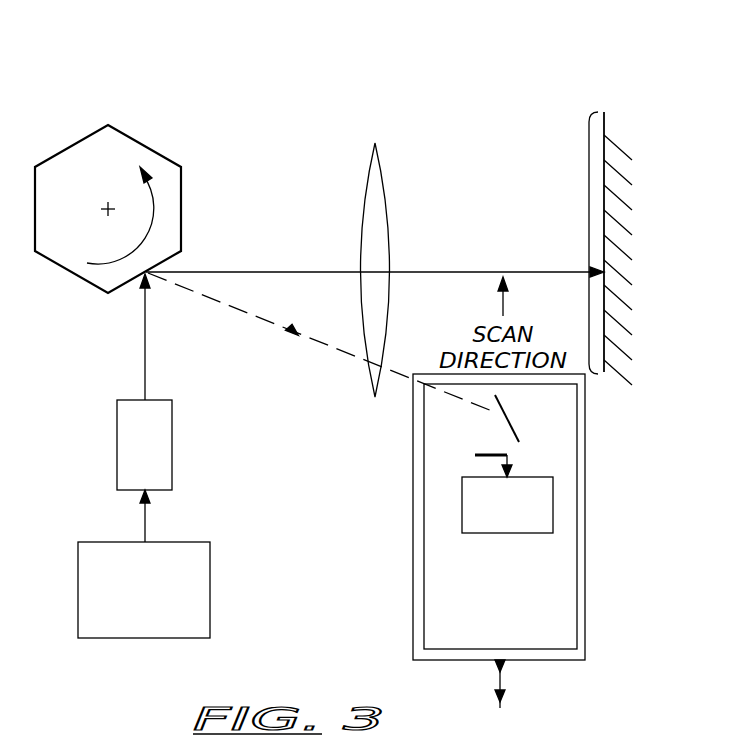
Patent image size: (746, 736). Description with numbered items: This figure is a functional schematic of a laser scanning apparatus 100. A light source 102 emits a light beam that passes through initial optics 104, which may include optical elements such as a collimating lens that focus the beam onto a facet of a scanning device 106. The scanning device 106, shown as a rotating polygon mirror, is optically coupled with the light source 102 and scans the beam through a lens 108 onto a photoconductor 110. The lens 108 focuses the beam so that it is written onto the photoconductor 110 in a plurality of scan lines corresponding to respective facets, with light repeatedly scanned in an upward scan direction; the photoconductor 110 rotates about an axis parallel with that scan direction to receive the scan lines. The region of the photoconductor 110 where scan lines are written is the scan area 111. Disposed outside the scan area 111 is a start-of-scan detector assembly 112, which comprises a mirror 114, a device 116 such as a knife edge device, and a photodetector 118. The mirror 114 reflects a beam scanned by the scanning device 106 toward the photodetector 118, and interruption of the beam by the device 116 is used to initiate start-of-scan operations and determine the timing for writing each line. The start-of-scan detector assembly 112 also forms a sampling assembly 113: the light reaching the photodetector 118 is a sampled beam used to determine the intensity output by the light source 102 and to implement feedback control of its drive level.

The laser scanning apparatus 100 is at (594, 41).
The light source 102 is at (176, 541).
The initial optics 104 is at (121, 453).
The scanning device 106 is at (153, 150).
The lens 108 is at (389, 295).
The photoconductor 110 is at (589, 116).
The scan area 111 is at (589, 152).
The start-of-scan detector assembly 112 is at (577, 489).
The sampling assembly 113 is at (585, 566).
The mirror 114 is at (510, 428).
The device 116 is at (482, 455).
The photodetector 118 is at (484, 516).